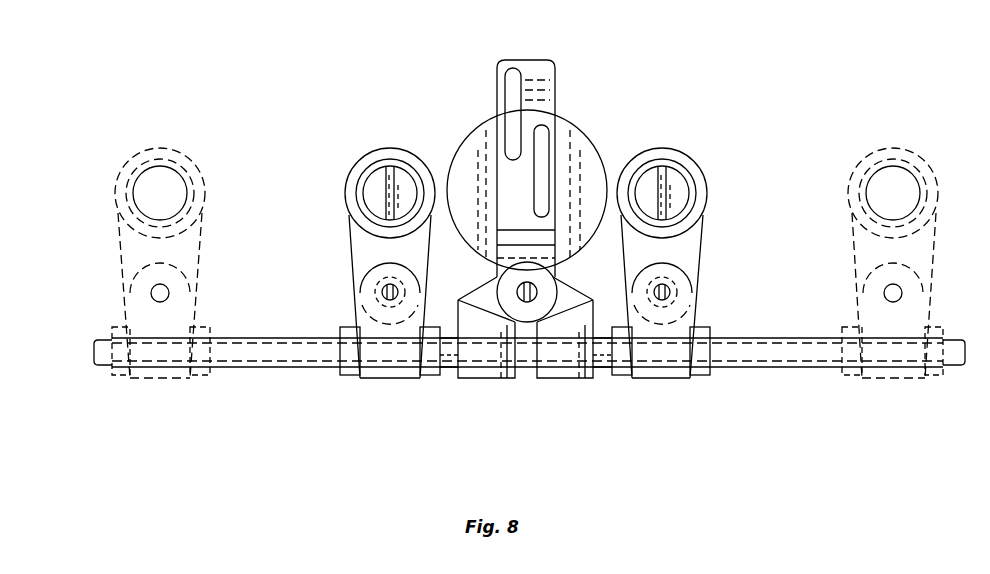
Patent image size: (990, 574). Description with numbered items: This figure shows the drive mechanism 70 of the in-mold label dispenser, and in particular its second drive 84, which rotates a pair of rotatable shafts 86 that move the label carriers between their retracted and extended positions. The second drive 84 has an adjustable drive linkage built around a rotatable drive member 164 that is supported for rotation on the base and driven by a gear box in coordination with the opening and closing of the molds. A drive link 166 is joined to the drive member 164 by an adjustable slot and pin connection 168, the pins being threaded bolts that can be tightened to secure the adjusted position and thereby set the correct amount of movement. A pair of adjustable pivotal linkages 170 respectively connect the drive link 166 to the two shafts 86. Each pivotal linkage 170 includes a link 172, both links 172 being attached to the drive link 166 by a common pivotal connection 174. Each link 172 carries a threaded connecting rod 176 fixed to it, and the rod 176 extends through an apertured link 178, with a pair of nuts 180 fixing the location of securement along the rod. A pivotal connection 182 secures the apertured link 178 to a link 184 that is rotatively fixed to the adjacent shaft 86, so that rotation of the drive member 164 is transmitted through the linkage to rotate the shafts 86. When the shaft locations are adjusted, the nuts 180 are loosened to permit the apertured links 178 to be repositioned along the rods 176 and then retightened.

The drive mechanism 70 is at (413, 447).
The second drive 84 is at (652, 127).
The rotatable shafts 86 is at (166, 185).
The rotatable drive member 164 is at (588, 140).
The drive link 166 is at (505, 180).
The adjustable slot and pin connection 168 is at (541, 213).
The adjustable pivotal linkages 170 is at (425, 390).
The link 172 is at (560, 348).
The common pivotal connection 174 is at (535, 285).
The threaded connecting rod 176 is at (282, 367).
The apertured link 178 is at (375, 330).
The nuts 180 is at (432, 330).
The pivotal connection 182 is at (385, 292).
The link 184 is at (367, 252).